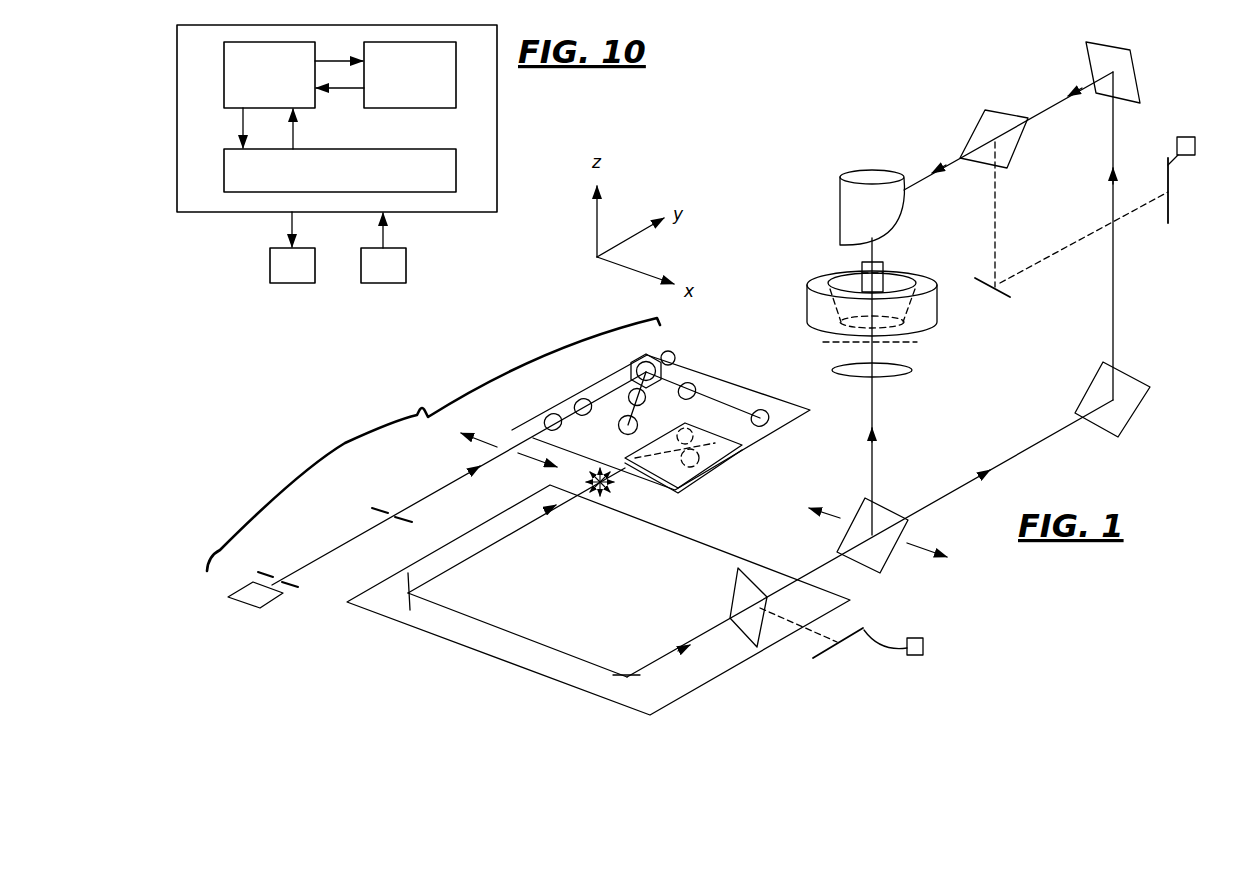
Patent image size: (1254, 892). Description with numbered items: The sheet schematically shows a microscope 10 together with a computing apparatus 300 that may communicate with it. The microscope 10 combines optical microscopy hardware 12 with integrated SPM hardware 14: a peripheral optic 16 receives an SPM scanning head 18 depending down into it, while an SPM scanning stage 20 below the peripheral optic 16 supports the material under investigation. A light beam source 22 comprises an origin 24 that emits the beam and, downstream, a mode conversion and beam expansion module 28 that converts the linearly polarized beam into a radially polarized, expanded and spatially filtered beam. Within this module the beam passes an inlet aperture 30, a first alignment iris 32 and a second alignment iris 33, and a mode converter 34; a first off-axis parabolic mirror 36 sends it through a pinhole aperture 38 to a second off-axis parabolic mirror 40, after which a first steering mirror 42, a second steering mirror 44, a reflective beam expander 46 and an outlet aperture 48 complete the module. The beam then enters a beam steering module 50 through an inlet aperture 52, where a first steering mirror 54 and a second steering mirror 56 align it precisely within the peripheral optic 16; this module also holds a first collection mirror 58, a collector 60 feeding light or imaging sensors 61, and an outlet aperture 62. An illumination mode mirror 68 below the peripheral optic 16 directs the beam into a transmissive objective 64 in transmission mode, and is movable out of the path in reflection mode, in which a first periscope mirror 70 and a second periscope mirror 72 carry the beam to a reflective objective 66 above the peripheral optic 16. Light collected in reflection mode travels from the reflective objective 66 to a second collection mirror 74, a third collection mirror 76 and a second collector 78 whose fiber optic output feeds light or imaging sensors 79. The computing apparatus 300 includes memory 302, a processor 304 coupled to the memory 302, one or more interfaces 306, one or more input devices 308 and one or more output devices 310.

In FIG. 1, the microscope 10 is at (271, 463).
In FIG. 1, the optical microscopy hardware 12 is at (1094, 454).
In FIG. 1, the SPM hardware 14 is at (898, 281).
In FIG. 1, the peripheral optic 16 is at (804, 296).
In FIG. 1, the SPM scanning head 18 is at (862, 268).
In FIG. 1, the SPM scanning stage 20 is at (919, 343).
In FIG. 1, the light beam source 22 is at (433, 444).
In FIG. 1, the origin 24 is at (270, 606).
In FIG. 1, the mode conversion and beam expansion (MCBE) module 28 is at (768, 376).
In FIG. 1, the inlet aperture 30 is at (525, 435).
In FIG. 1, the first alignment iris 32 is at (550, 412).
In FIG. 1, the second alignment iris 33 is at (667, 351).
In FIG. 1, the mode converter 34 is at (583, 398).
In FIG. 1, the first off-axis parabolic mirror 36 is at (640, 357).
In FIG. 1, the pinhole aperture 38 is at (647, 396).
In FIG. 1, the second off-axis parabolic mirror 40 is at (620, 424).
In FIG. 1, the first steering mirror 42 is at (694, 386).
In FIG. 1, the second steering mirror 44 is at (769, 421).
In FIG. 1, the reflective beam expander 46 is at (722, 456).
In FIG. 1, the outlet aperture 48 is at (626, 474).
In FIG. 1, the beam steering module 50 is at (486, 655).
In FIG. 1, the inlet aperture 52 is at (588, 498).
In FIG. 1, the first steering mirror 54 is at (410, 604).
In FIG. 1, the second steering mirror 56 is at (636, 675).
In FIG. 1, the first collection mirror 58 is at (722, 583).
In FIG. 1, the collector 60 is at (838, 666).
In FIG. 1, the light or imaging sensors 61 is at (922, 639).
In FIG. 1, the outlet aperture 62 is at (791, 582).
In FIG. 1, the transmissive objective 64 is at (908, 383).
In FIG. 1, the reflective objective 66 is at (853, 165).
In FIG. 1, the illumination mode mirror 68 is at (887, 499).
In FIG. 1, the first periscope mirror 70 is at (1146, 412).
In FIG. 1, the second periscope mirror 72 is at (1157, 62).
In FIG. 1, the second collection mirror 74 is at (1006, 103).
In FIG. 1, the third collection mirror 76 is at (1005, 298).
In FIG. 1, the second collector 78 is at (1181, 194).
In FIG. 1, the light or imaging sensors 79 is at (1193, 140).
In FIG. 10, the computing apparatus 300 is at (184, 230).
In FIG. 10, the memory 302 is at (410, 75).
In FIG. 10, the processor 304 is at (269, 75).
In FIG. 10, the interfaces 306 is at (340, 170).
In FIG. 10, the input devices 308 is at (383, 265).
In FIG. 10, the output devices 310 is at (292, 265).